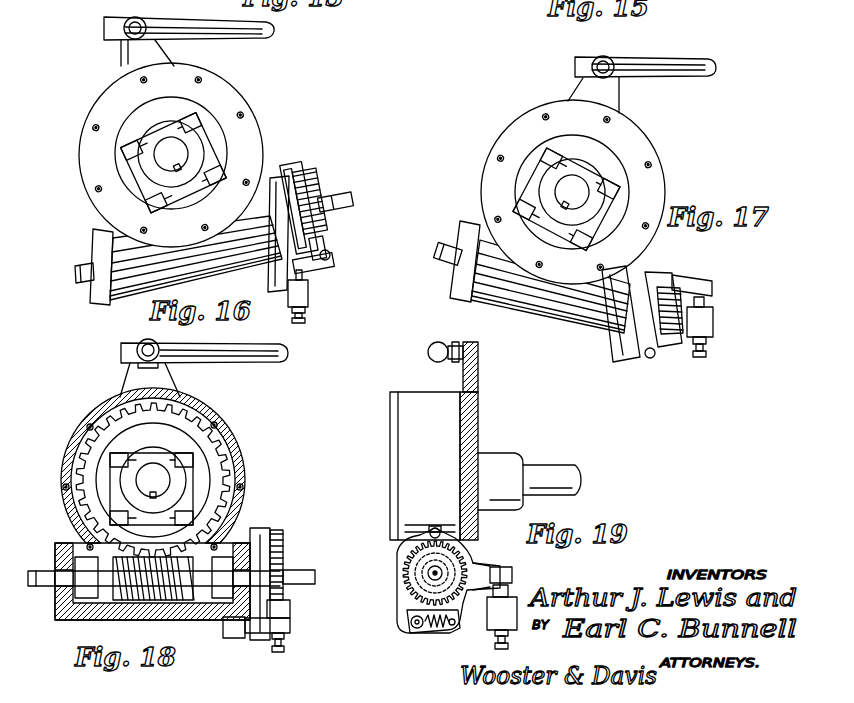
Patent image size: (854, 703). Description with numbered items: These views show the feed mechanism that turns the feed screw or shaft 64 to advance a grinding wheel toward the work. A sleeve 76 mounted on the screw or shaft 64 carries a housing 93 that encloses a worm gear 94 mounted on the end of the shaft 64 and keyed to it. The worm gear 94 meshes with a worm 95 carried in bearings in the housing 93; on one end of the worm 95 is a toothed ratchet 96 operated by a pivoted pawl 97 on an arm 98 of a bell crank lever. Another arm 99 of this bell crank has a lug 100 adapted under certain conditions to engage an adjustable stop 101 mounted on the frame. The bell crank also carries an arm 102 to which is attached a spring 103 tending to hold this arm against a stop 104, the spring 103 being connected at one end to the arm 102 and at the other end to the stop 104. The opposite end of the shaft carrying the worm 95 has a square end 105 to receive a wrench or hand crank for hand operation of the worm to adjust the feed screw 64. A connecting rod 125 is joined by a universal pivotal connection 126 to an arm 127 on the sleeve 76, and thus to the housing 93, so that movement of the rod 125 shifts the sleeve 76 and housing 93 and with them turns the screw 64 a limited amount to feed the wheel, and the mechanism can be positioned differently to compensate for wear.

In FIG. 16, the feed screw or shaft 64 is at (171, 150).
In FIG. 17, the feed screw or shaft 64 is at (573, 186).
In FIG. 18, the feed screw or shaft 64 is at (153, 463).
In FIG. 19, the feed screw or shaft 64 is at (542, 470).
In FIG. 19, the sleeve 76 is at (505, 462).
In FIG. 16, the housing 93 is at (255, 100).
In FIG. 17, the housing 93 is at (663, 180).
In FIG. 18, the housing 93 is at (240, 440).
In FIG. 19, the housing 93 is at (408, 430).
In FIG. 18, the worm gear 94 is at (213, 475).
In FIG. 18, the worm 95 is at (132, 603).
In FIG. 16, the toothed ratchet 96 is at (318, 185).
In FIG. 17, the toothed ratchet 96 is at (660, 335).
In FIG. 18, the toothed ratchet 96 is at (283, 560).
In FIG. 19, the toothed ratchet 96 is at (408, 576).
In FIG. 16, the pivoted pawl 97 is at (297, 163).
In FIG. 17, the pivoted pawl 97 is at (668, 275).
In FIG. 19, the pivoted pawl 97 is at (398, 548).
In FIG. 16, the arm 98 is at (283, 175).
In FIG. 17, the arm 98 is at (642, 263).
In FIG. 18, the arm 98 is at (258, 530).
In FIG. 19, the arm 98 is at (460, 544).
In FIG. 19, the arm 99 is at (485, 568).
In FIG. 16, the lug 100 is at (350, 200).
In FIG. 17, the lug 100 is at (710, 285).
In FIG. 18, the lug 100 is at (305, 575).
In FIG. 19, the lug 100 is at (513, 574).
In FIG. 16, the adjustable stop 101 is at (298, 296).
In FIG. 17, the adjustable stop 101 is at (708, 305).
In FIG. 18, the adjustable stop 101 is at (290, 594).
In FIG. 19, the adjustable stop 101 is at (488, 600).
In FIG. 16, the arm 102 is at (320, 238).
In FIG. 18, the arm 102 is at (290, 608).
In FIG. 19, the arm 102 is at (408, 614).
In FIG. 19, the spring 103 is at (440, 628).
In FIG. 16, the stop 104 is at (327, 262).
In FIG. 17, the stop 104 is at (648, 358).
In FIG. 18, the stop 104 is at (256, 635).
In FIG. 19, the stop 104 is at (414, 630).
In FIG. 16, the square end 105 is at (90, 280).
In FIG. 17, the square end 105 is at (437, 260).
In FIG. 18, the square end 105 is at (34, 570).
In FIG. 16, the connecting rod 125 is at (255, 36).
In FIG. 17, the connecting rod 125 is at (677, 58).
In FIG. 18, the connecting rod 125 is at (285, 350).
In FIG. 19, the connecting rod 125 is at (427, 352).
In FIG. 16, the universal pivotal connection 126 is at (124, 29).
In FIG. 17, the universal pivotal connection 126 is at (592, 68).
In FIG. 18, the universal pivotal connection 126 is at (137, 352).
In FIG. 19, the universal pivotal connection 126 is at (452, 345).
In FIG. 16, the arm 127 is at (118, 62).
In FIG. 17, the arm 127 is at (606, 96).
In FIG. 18, the arm 127 is at (168, 384).
In FIG. 19, the arm 127 is at (478, 365).